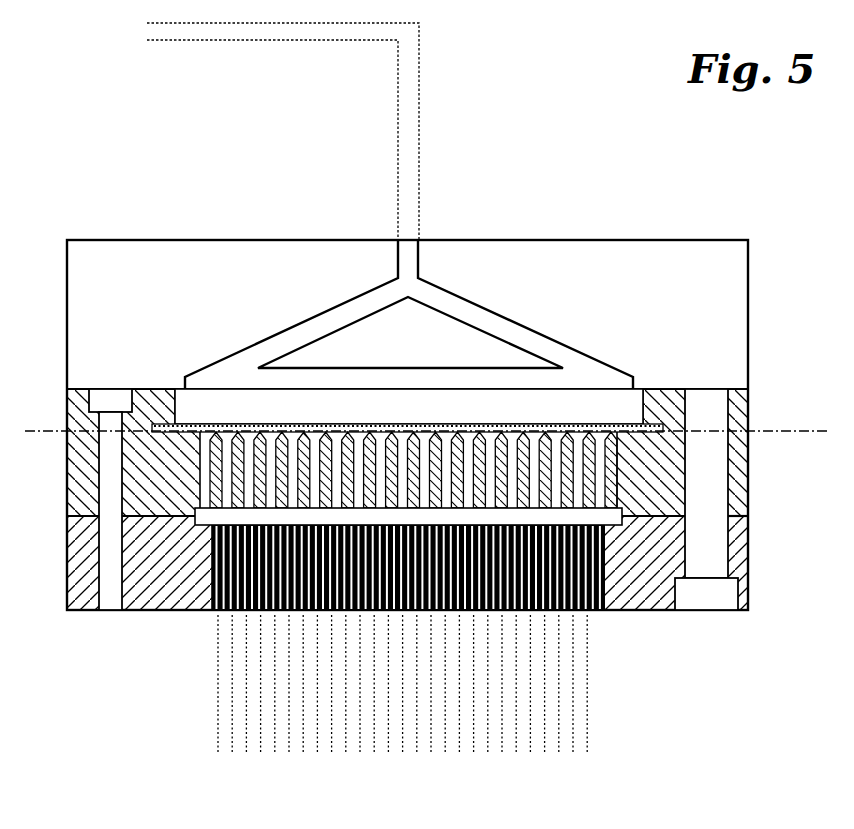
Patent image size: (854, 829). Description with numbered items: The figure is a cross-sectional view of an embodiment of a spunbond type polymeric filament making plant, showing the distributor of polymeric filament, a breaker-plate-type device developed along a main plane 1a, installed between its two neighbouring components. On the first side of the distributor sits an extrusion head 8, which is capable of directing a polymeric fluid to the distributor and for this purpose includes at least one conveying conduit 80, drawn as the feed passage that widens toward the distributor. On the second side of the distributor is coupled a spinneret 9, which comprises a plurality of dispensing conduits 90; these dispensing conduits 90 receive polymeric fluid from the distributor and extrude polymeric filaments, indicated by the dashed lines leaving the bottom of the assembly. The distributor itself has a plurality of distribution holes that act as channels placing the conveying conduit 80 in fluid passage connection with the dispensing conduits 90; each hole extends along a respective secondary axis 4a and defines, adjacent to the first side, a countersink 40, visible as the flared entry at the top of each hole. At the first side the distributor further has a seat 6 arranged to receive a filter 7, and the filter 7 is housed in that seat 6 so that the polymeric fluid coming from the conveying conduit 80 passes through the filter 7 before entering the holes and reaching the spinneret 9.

The extrusion head 8 is at (610, 228).
The conveying conduit 80 is at (410, 284).
The main plane 1a is at (78, 433).
The seat 6 is at (158, 403).
The filter 7 is at (250, 426).
The countersink 40 is at (615, 440).
The secondary axis 4a is at (262, 510).
The spinneret 9 is at (176, 640).
The dispensing conduits 90 is at (563, 613).